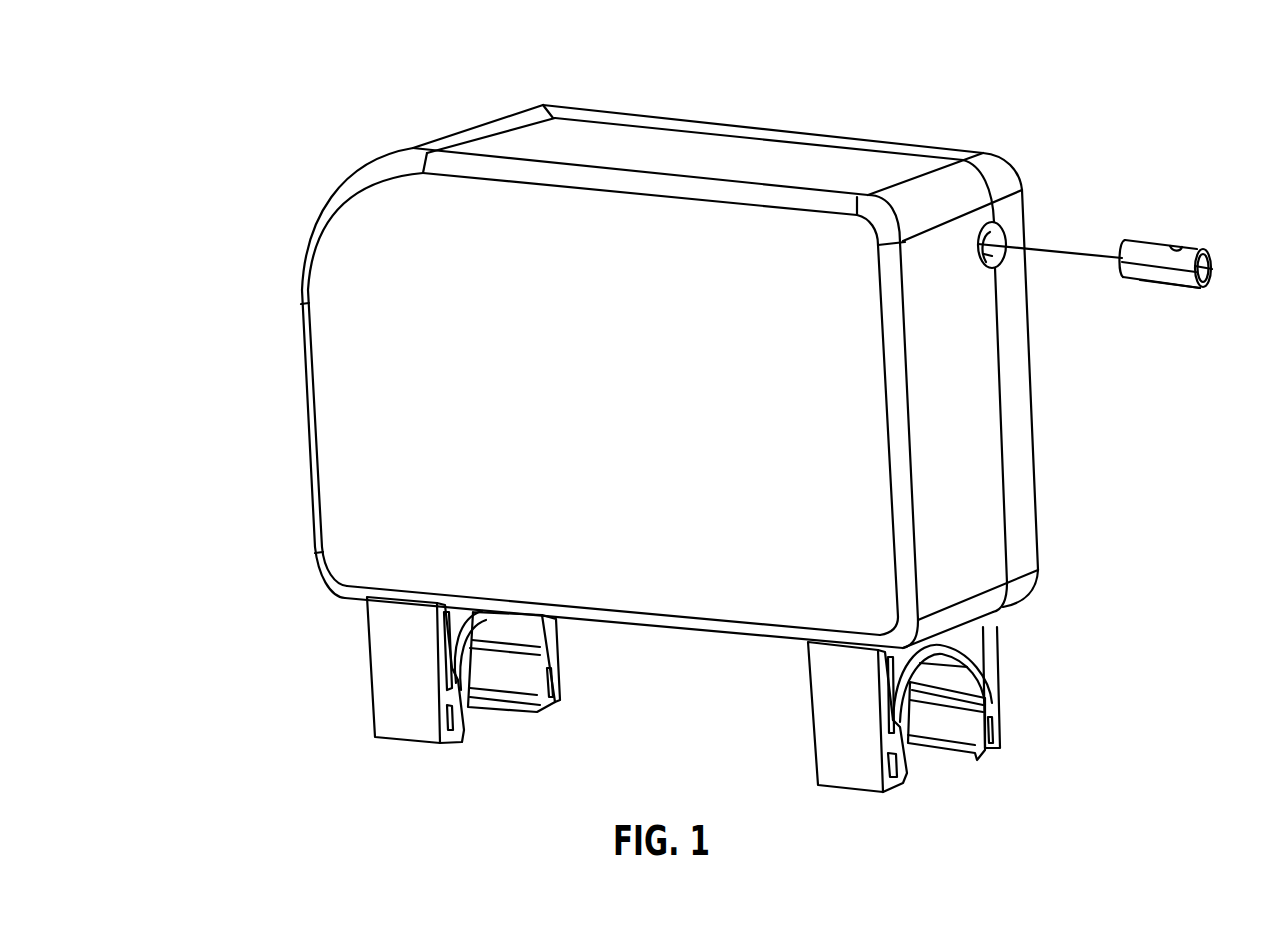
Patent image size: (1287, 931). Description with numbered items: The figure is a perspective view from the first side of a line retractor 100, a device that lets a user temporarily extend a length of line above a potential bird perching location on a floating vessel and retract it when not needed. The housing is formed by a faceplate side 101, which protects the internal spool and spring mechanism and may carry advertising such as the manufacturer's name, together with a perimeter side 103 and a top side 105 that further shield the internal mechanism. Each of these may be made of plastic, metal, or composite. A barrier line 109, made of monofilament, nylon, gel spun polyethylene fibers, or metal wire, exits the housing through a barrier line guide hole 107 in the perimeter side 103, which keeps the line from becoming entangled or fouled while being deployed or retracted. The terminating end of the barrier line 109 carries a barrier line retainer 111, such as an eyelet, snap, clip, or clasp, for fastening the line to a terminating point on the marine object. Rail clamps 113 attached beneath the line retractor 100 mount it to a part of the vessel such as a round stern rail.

The line retractor 100 is at (305, 183).
The faceplate side 101 is at (450, 399).
The perimeter side 103 is at (960, 452).
The top side 105 is at (615, 148).
The barrier line guide hole 107 is at (993, 222).
The barrier line 109 is at (1065, 252).
The barrier line retainer 111 is at (1163, 285).
The rail clamp 113 is at (405, 680).